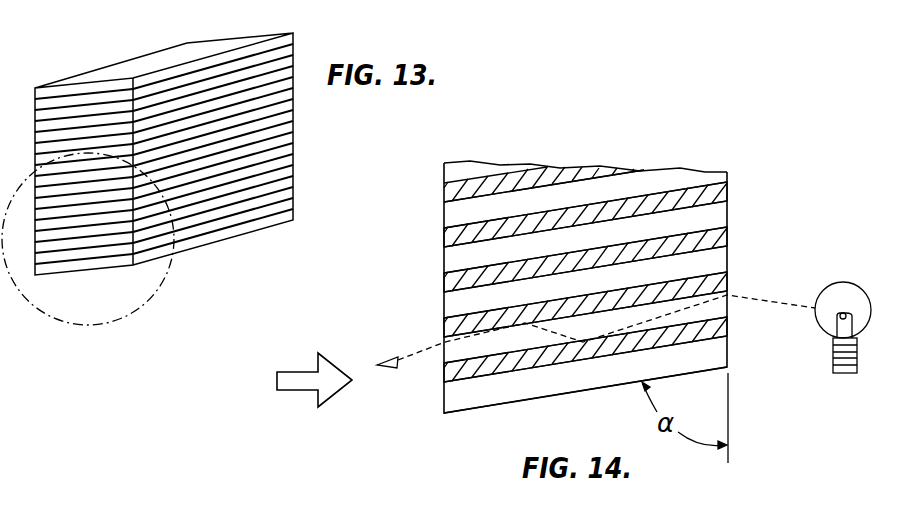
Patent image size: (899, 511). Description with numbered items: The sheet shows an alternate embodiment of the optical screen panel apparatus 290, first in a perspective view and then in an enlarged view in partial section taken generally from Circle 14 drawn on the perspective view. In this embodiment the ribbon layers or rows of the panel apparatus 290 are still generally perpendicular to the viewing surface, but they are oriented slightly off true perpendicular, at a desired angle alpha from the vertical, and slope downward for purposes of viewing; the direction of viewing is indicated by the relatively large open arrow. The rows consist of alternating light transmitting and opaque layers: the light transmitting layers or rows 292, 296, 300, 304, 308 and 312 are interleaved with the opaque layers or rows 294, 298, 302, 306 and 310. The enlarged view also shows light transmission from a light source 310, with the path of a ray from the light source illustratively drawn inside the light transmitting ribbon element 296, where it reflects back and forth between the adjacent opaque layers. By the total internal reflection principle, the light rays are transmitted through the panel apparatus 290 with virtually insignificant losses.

In FIG. 13, the Circle 14 is at (73, 323).
In FIG. 13, the optical screen panel apparatus 290 is at (148, 43).
In FIG. 14, the optical screen panel apparatus 290 is at (714, 143).
In FIG. 14, the light transmitting layer 292 is at (482, 398).
In FIG. 14, the opaque layer 294 is at (443, 378).
In FIG. 14, the light transmitting ribbon element 296 is at (725, 308).
In FIG. 14, the opaque layer 298 is at (725, 278).
In FIG. 14, the light transmitting layer 300 is at (443, 308).
In FIG. 14, the opaque layer 302 is at (443, 280).
In FIG. 14, the light transmitting layer 304 is at (713, 212).
In FIG. 14, the opaque layer 306 is at (443, 237).
In FIG. 14, the light transmitting layer 308 is at (443, 215).
In FIG. 14, the light source 310 is at (569, 167).
In FIG. 14, the light transmitting layer 312 is at (472, 167).